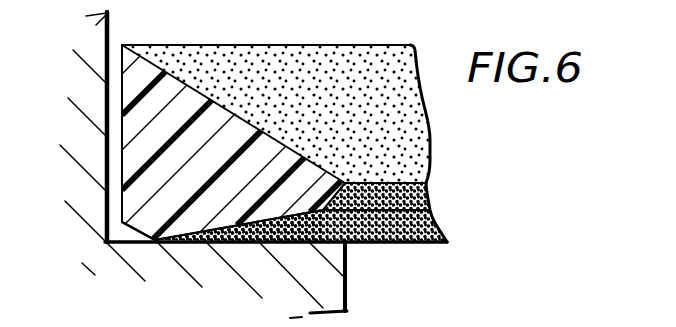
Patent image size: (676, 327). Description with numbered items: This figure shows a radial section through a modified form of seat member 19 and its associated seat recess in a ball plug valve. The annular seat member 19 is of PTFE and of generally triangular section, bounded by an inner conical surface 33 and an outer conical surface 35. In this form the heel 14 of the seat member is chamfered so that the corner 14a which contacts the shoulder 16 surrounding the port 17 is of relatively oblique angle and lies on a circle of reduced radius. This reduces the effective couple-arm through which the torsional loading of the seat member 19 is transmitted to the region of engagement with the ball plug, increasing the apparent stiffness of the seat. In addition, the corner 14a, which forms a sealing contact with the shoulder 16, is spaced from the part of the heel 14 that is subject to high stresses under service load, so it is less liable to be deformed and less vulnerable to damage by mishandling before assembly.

The heel 14 is at (117, 249).
The corner 14a is at (158, 243).
The shoulder 16 is at (293, 243).
The port 17 is at (347, 280).
The seat member 19 is at (195, 107).
The inner conical surface 33 is at (250, 243).
The outer conical surface 35 is at (120, 168).